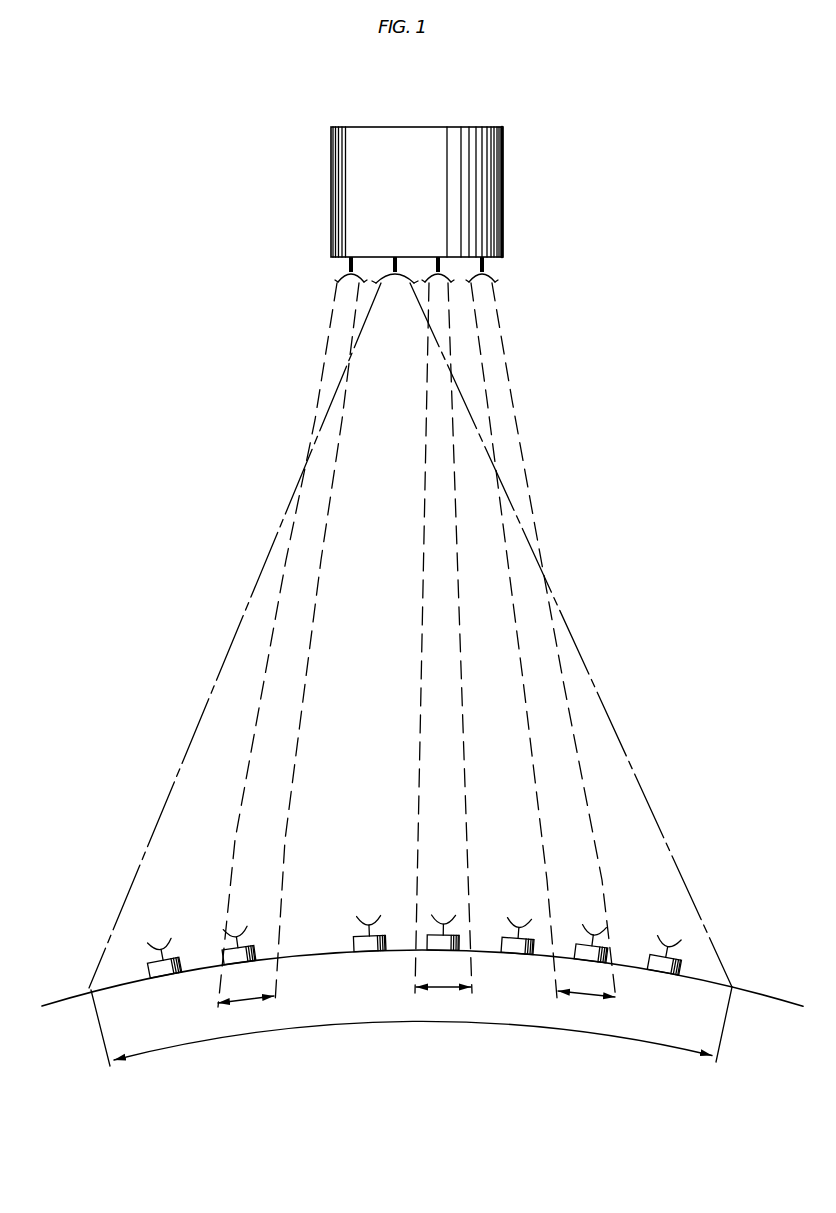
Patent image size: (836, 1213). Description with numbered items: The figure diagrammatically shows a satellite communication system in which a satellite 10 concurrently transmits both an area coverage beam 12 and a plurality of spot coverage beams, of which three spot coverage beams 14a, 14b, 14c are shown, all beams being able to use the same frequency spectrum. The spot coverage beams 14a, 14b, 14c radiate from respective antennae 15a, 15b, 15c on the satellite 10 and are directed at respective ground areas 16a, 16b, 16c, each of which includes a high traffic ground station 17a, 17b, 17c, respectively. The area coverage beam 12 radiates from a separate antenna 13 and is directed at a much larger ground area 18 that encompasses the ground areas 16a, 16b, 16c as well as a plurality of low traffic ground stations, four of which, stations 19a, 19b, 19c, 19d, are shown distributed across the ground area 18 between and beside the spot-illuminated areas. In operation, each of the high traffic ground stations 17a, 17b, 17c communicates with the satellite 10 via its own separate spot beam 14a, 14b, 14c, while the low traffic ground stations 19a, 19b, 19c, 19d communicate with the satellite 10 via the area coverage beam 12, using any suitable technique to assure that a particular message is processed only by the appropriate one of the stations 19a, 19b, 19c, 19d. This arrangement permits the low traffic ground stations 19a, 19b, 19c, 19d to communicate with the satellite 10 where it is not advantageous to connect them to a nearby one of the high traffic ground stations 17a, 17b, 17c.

The satellite 10 is at (504, 210).
The area coverage beam 12 is at (207, 712).
The antenna 13 is at (383, 272).
The spot coverage beam 14a is at (300, 736).
The spot coverage beam 14b is at (420, 718).
The spot coverage beam 14c is at (527, 725).
The antenna 15a is at (343, 274).
The antenna 15b is at (437, 273).
The antenna 15c is at (493, 276).
The ground area 16a is at (243, 1003).
The ground area 16b is at (440, 991).
The ground area 16c is at (587, 997).
The high traffic ground station 17a is at (243, 957).
The high traffic ground station 17b is at (440, 943).
The high traffic ground station 17c is at (592, 953).
The ground area 18 is at (407, 1024).
The low traffic ground station 19a is at (152, 964).
The low traffic ground station 19b is at (362, 942).
The low traffic ground station 19c is at (508, 945).
The low traffic ground station 19d is at (655, 966).